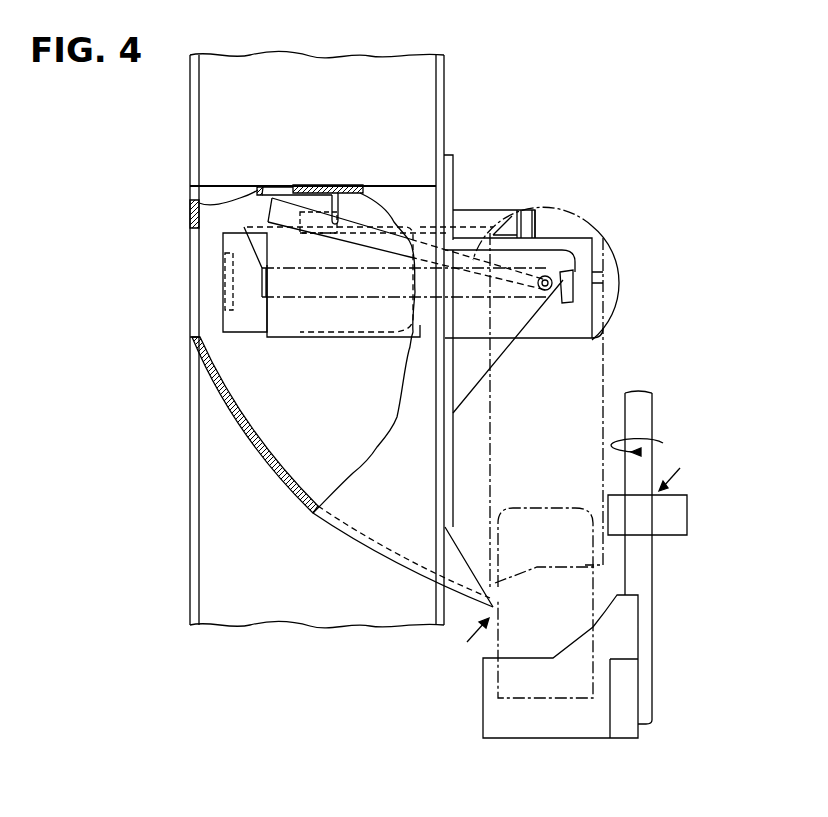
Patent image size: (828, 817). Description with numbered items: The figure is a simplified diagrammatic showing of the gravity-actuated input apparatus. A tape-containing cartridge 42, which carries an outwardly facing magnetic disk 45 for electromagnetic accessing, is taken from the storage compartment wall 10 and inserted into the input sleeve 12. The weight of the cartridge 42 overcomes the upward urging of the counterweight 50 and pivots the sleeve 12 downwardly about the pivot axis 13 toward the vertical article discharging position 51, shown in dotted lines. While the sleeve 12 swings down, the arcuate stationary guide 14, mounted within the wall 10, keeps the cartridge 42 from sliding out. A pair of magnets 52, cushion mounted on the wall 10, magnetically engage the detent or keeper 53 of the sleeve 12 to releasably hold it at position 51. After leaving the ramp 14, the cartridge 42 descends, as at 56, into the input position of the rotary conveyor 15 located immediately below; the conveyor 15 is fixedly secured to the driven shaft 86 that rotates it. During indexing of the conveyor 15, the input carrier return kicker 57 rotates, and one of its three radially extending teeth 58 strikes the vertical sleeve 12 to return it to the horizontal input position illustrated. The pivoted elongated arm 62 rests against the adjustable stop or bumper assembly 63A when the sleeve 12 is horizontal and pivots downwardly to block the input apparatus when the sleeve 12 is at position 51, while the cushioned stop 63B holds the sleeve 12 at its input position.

The storage compartment wall 10 is at (335, 134).
The input sleeve 12 is at (303, 339).
The pivot axis 13 is at (549, 277).
The arcuate guide 14 is at (268, 468).
The rotary conveyor 15 is at (483, 698).
The tape-containing cartridge 42 is at (238, 334).
The magnetic disk 45 is at (230, 283).
The counterweight 50 is at (607, 260).
The vertical article discharging position 51 is at (605, 355).
The magnets 52 is at (525, 218).
The detent or keeper 53 is at (603, 283).
The descent location 56 is at (464, 640).
The input carrier return kicker 57 is at (682, 473).
The teeth 58 is at (680, 508).
The pivoted elongated arm 62 is at (343, 220).
The adjustable stop or bumper assembly 63A is at (272, 188).
The cushioned stop 63B is at (318, 231).
The driven shaft 86 is at (645, 405).